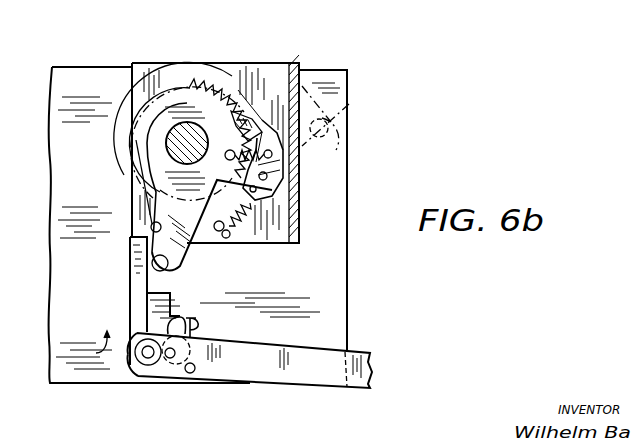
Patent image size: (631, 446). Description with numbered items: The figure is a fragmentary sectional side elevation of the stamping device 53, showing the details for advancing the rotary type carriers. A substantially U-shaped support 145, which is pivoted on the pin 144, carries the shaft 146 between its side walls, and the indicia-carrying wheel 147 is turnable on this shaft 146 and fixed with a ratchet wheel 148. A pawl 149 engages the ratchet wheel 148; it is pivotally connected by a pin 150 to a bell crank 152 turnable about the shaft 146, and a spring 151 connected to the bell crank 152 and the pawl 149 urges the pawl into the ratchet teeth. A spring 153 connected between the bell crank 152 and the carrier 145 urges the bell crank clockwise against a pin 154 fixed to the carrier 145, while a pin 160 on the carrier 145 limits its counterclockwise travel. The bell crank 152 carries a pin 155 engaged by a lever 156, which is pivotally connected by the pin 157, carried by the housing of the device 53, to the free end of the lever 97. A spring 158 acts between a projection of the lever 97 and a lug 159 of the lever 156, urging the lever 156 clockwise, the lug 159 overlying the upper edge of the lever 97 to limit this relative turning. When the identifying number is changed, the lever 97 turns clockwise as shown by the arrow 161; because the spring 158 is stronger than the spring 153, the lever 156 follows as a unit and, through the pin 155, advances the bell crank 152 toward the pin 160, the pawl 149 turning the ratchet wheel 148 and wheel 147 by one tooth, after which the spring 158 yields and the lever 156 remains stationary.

The stamping device 53 is at (77, 70).
The lever 97 is at (326, 375).
The pin 144 is at (336, 122).
The U-shaped support 145 is at (264, 68).
The shaft 146 is at (190, 130).
The rotary indicia carrier 147 is at (172, 82).
The ratchet wheel 148 is at (154, 100).
The pawl 149 is at (262, 130).
The pin 150 is at (268, 180).
The spring 151 is at (246, 150).
The bell crank 152 is at (155, 162).
The spring 153 is at (255, 242).
The pin 154 is at (151, 227).
The pin 155 is at (169, 264).
The lever 156 is at (130, 290).
The pin 157 is at (148, 365).
The spring 158 is at (183, 323).
The lug 159 is at (198, 330).
The pin 160 is at (222, 236).
The arrow 161 is at (96, 353).